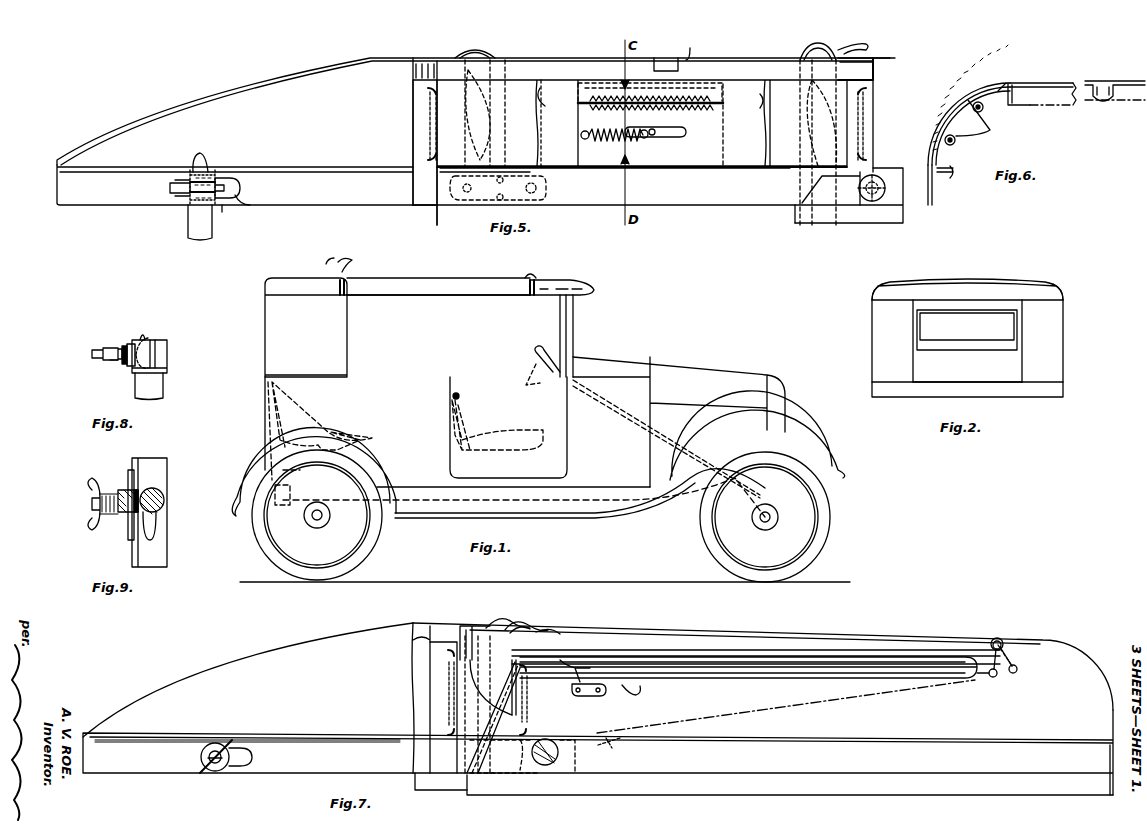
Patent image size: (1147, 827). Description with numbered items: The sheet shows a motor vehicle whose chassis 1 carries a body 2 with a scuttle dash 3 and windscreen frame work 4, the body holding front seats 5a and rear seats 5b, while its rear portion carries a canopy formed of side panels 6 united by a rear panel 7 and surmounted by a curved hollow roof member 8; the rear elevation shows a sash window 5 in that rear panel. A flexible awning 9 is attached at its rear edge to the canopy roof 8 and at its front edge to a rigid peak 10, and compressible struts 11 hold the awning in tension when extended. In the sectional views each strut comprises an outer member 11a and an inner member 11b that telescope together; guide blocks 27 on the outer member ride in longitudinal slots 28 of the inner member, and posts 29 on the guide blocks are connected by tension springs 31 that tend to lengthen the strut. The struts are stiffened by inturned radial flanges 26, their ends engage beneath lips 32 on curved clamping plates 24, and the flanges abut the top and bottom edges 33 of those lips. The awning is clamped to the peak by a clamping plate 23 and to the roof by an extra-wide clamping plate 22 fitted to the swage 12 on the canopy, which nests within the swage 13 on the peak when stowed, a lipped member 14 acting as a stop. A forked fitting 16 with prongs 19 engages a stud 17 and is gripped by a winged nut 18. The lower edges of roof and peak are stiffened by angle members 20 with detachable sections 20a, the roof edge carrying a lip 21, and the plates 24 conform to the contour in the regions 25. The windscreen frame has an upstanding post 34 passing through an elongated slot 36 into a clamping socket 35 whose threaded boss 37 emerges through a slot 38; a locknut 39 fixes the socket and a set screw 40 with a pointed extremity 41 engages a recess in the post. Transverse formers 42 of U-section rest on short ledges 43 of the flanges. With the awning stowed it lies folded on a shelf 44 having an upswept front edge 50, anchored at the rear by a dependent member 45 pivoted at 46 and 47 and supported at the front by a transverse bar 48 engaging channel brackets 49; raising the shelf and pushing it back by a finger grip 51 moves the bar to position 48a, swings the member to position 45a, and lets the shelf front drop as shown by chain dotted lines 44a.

In FIG. 1, the chassis 1 is at (404, 514).
In FIG. 1, the body 2 is at (512, 437).
In FIG. 2, the body 2 is at (1048, 393).
In FIG. 1, the scuttle dash 3 is at (617, 362).
In FIG. 5, the windscreen frame work 4 is at (188, 224).
In FIG. 1, the windscreen frame work 4 is at (575, 330).
In FIG. 8, the windscreen frame work 4 is at (165, 388).
In FIG. 2, the sash window 5 is at (967, 330).
In FIG. 1, the front seats 5a is at (522, 436).
In FIG. 1, the rear seats 5b is at (318, 438).
In FIG. 1, the side panels 6 is at (306, 327).
In FIG. 2, the side panels 6 is at (870, 332).
In FIG. 1, the rear panel 7 is at (538, 453).
In FIG. 2, the rear panel 7 is at (967, 371).
In FIG. 1, the canopy roof 8 is at (306, 290).
In FIG. 2, the canopy roof 8 is at (967, 290).
In FIG. 7, the canopy roof 8 is at (905, 636).
In FIG. 5, the flexible awning 9 is at (681, 58).
In FIG. 6, the flexible awning 9 is at (934, 204).
In FIG. 1, the flexible awning 9 is at (445, 284).
In FIG. 7, the flexible awning 9 is at (678, 664).
In FIG. 5, the peak 10 is at (288, 76).
In FIG. 1, the peak 10 is at (572, 286).
In FIG. 7, the peak 10 is at (242, 664).
In FIG. 5, the compressible struts 11 is at (772, 170).
In FIG. 5, the outer telescopic member 11a is at (557, 123).
In FIG. 6, the outer telescopic member 11a is at (992, 88).
In FIG. 5, the inner telescopic member 11b is at (739, 125).
In FIG. 6, the inner telescopic member 11b is at (948, 112).
In FIG. 5, the swage on canopy 12 is at (818, 60).
In FIG. 1, the swage on canopy 12 is at (348, 278).
In FIG. 7, the swage on canopy 12 is at (525, 626).
In FIG. 5, the swage on peak 13 is at (475, 52).
In FIG. 1, the swage on peak 13 is at (538, 278).
In FIG. 7, the swage on peak 13 is at (505, 622).
In FIG. 5, the lipped member 14 is at (853, 43).
In FIG. 1, the lipped member 14 is at (339, 263).
In FIG. 7, the lipped member 14 is at (545, 630).
In FIG. 5, the forked fitting 16 is at (465, 196).
In FIG. 7, the forked fitting 16 is at (494, 778).
In FIG. 5, the stud 17 is at (885, 182).
In FIG. 7, the stud 17 is at (546, 766).
In FIG. 5, the winged nut 18 is at (873, 60).
In FIG. 7, the winged nut 18 is at (560, 750).
In FIG. 5, the prongs 19 is at (540, 187).
In FIG. 5, the angle members 20 is at (318, 186).
In FIG. 8, the angle members 20 is at (165, 373).
In FIG. 9, the angle members 20 is at (168, 530).
In FIG. 7, the angle members 20 is at (404, 762).
In FIG. 5, the detachable sections 20a is at (428, 205).
In FIG. 7, the detachable sections 20a is at (460, 773).
In FIG. 7, the lip 21 is at (915, 794).
In FIG. 5, the clamping plate 22 is at (876, 71).
In FIG. 7, the clamping plate 22 is at (482, 622).
In FIG. 5, the clamping plate 23 is at (417, 68).
In FIG. 7, the clamping plate 23 is at (428, 634).
In FIG. 5, the curved clamping plates 24 is at (418, 122).
In FIG. 7, the curved clamping plates 24 is at (437, 688).
In FIG. 2, the regions 25 is at (877, 286).
In FIG. 5, the radial flanges 26 is at (540, 102).
In FIG. 6, the radial flanges 26 is at (978, 90).
In FIG. 5, the guide blocks 27 is at (653, 128).
In FIG. 6, the guide blocks 27 is at (984, 108).
In FIG. 5, the longitudinal slots 28 is at (682, 98).
In FIG. 5, the posts 29 is at (646, 137).
In FIG. 5, the tension springs 31 is at (616, 105).
In FIG. 6, the tension springs 31 is at (990, 135).
In FIG. 5, the lips 32 is at (433, 128).
In FIG. 7, the lips 32 is at (447, 678).
In FIG. 5, the top and bottom edges 33 is at (430, 90).
In FIG. 7, the top and bottom edges 33 is at (448, 652).
In FIG. 5, the upstanding post 34 is at (200, 157).
In FIG. 8, the upstanding post 34 is at (160, 338).
In FIG. 9, the upstanding post 34 is at (164, 490).
In FIG. 5, the clamping socket 35 is at (210, 174).
In FIG. 8, the clamping socket 35 is at (160, 357).
In FIG. 9, the clamping socket 35 is at (164, 504).
In FIG. 5, the elongated slot 36 is at (228, 216).
In FIG. 9, the elongated slot 36 is at (158, 540).
In FIG. 8, the threaded boss 37 is at (116, 362).
In FIG. 9, the threaded boss 37 is at (134, 492).
In FIG. 5, the slot 38 is at (248, 206).
In FIG. 8, the slot 38 is at (125, 344).
In FIG. 9, the slot 38 is at (130, 540).
In FIG. 7, the slot 38 is at (252, 764).
In FIG. 9, the locknut 39 is at (116, 516).
In FIG. 7, the locknut 39 is at (218, 770).
In FIG. 5, the set screw 40 is at (238, 186).
In FIG. 8, the set screw 40 is at (108, 348).
In FIG. 9, the set screw 40 is at (100, 512).
In FIG. 7, the set screw 40 is at (200, 764).
In FIG. 8, the pointed extremity 41 is at (160, 336).
In FIG. 6, the transverse formers 42 is at (1098, 86).
In FIG. 6, the ledges 43 is at (1035, 106).
In FIG. 7, the shelf 44 is at (818, 680).
In FIG. 7, the dropped shelf position 44a is at (882, 692).
In FIG. 7, the dependent member 45 is at (984, 660).
In FIG. 7, the swung-back position 45a is at (1010, 658).
In FIG. 7, the pivot 46 is at (1003, 642).
In FIG. 7, the pivot 47 is at (1012, 674).
In FIG. 7, the transverse bar 48 is at (576, 670).
In FIG. 7, the released bar position 48a is at (615, 746).
In FIG. 7, the channel brackets 49 is at (590, 697).
In FIG. 5, the upswept front edge 50 is at (590, 138).
In FIG. 7, the upswept front edge 50 is at (528, 664).
In FIG. 7, the finger grip 51 is at (641, 690).